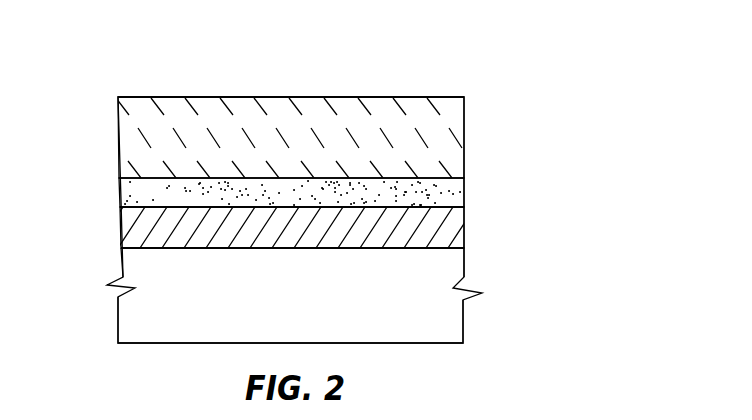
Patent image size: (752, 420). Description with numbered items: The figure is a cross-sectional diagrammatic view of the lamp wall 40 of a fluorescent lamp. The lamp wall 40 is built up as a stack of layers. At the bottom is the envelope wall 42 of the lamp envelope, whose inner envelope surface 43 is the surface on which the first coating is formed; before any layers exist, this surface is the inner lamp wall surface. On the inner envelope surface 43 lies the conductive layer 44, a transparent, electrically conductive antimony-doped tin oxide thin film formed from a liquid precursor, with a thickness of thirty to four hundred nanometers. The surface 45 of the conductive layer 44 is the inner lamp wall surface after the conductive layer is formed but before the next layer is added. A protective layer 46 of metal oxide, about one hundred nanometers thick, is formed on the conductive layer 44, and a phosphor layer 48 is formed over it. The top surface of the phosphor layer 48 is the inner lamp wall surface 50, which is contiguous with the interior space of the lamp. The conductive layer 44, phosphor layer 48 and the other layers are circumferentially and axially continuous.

The lamp wall 40 is at (577, 167).
The envelope wall 42 is at (293, 316).
The inner envelope surface 43 is at (367, 250).
The conductive layer 44 is at (452, 223).
The surface of conductive layer 45 is at (167, 206).
The protective layer 46 is at (453, 200).
The phosphor layer 48 is at (438, 128).
The inner lamp wall surface 50 is at (307, 97).